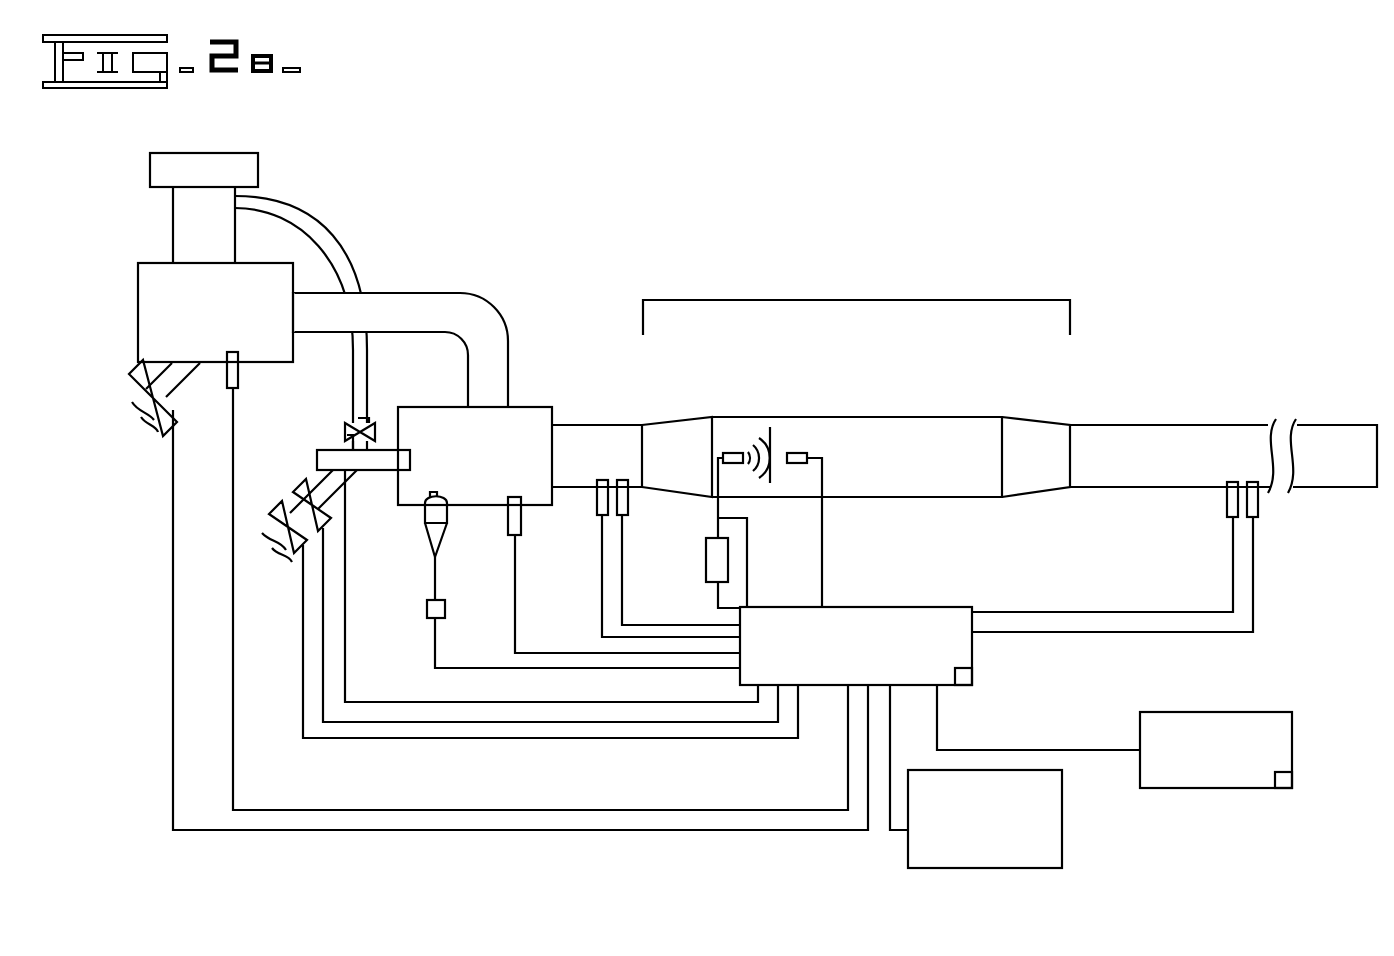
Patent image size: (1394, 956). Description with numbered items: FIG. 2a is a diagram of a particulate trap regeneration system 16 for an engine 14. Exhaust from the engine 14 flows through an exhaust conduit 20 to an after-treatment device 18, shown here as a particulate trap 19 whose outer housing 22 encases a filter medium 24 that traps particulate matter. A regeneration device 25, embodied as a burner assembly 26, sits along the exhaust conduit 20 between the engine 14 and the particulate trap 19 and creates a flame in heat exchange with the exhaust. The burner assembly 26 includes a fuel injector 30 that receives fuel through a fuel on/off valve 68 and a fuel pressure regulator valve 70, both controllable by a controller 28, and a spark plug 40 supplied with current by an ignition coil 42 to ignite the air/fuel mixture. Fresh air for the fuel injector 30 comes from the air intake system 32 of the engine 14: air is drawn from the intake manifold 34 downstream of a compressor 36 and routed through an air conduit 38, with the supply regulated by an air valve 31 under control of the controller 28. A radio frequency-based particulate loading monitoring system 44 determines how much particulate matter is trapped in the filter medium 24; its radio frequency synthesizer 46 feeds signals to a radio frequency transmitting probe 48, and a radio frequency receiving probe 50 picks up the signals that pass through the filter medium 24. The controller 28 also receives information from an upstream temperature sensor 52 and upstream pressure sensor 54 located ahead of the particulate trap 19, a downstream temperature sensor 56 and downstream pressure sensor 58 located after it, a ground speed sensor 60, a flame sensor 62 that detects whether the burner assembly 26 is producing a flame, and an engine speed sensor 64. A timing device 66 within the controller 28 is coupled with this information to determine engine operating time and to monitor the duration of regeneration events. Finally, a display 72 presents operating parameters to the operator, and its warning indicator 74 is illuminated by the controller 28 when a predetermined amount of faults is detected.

The engine 14 is at (138, 277).
The particulate trap regeneration system 16 is at (808, 253).
The after-treatment device 18 is at (935, 300).
The particulate trap 19 is at (1012, 404).
The exhaust conduit 20 is at (470, 297).
The outer housing 22 is at (887, 417).
The filter medium 24 is at (770, 483).
The regeneration device 25 is at (563, 318).
The burner assembly 26 is at (457, 407).
The controller 28 is at (882, 607).
The fuel injector 30 is at (330, 450).
The air valve 31 is at (375, 423).
The air intake system 32 is at (305, 191).
The intake manifold 34 is at (220, 237).
The compressor 36 is at (220, 183).
The air conduit 38 is at (340, 240).
The spark plug 40 is at (425, 510).
The ignition coil 42 is at (427, 605).
The radio frequency-based particulate loading monitoring system 44 is at (843, 525).
The radio frequency synthesizer 46 is at (706, 560).
The radio frequency transmitting probe 48 is at (735, 453).
The radio frequency receiving probe 50 is at (798, 453).
The upstream temperature sensor 52 is at (598, 502).
The upstream pressure sensor 54 is at (630, 505).
The downstream temperature sensor 56 is at (1228, 500).
The downstream pressure sensor 58 is at (1260, 502).
The ground speed sensor 60 is at (1062, 798).
The flame sensor 62 is at (510, 520).
The engine speed sensor 64 is at (240, 367).
The timing device 66 is at (972, 675).
The fuel on/off valve 68 is at (286, 506).
The fuel pressure regulator valve 70 is at (306, 481).
The display 72 is at (1292, 736).
The warning indicator 74 is at (1292, 780).